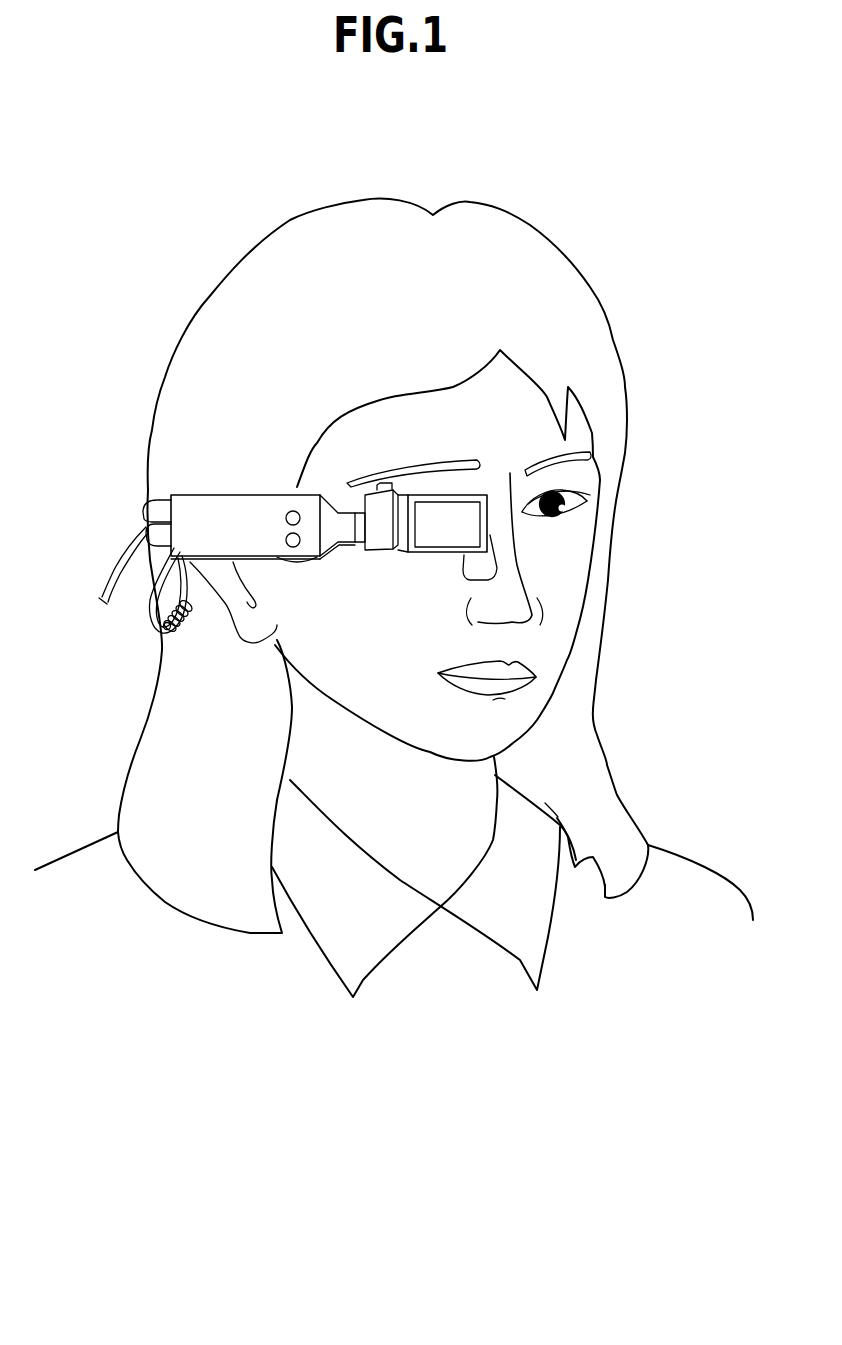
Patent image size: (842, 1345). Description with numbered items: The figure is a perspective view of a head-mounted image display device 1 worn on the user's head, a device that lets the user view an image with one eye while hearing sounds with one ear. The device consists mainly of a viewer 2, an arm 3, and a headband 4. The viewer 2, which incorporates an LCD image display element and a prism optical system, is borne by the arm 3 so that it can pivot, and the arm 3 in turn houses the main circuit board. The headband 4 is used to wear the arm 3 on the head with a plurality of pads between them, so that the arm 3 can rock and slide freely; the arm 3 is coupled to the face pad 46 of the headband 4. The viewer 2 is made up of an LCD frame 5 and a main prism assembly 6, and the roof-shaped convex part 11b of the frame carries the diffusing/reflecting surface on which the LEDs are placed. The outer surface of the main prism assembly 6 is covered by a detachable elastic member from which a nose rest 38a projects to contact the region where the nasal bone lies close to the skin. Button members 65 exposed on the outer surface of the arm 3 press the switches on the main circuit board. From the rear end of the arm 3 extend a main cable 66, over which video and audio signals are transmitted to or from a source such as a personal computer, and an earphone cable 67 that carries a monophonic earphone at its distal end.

The head-mounted image display device 1 is at (337, 491).
The viewer 2 is at (412, 494).
The arm 3 is at (228, 518).
The headband 4 is at (135, 505).
The LCD frame 5 is at (383, 538).
The main prism assembly 6 is at (432, 551).
The roof-shaped convex part 11b is at (382, 483).
The nose rest 38a is at (482, 570).
The face pad 46 is at (298, 567).
The button members 65 is at (286, 537).
The main cable 66 is at (112, 592).
The earphone cable 67 is at (190, 640).